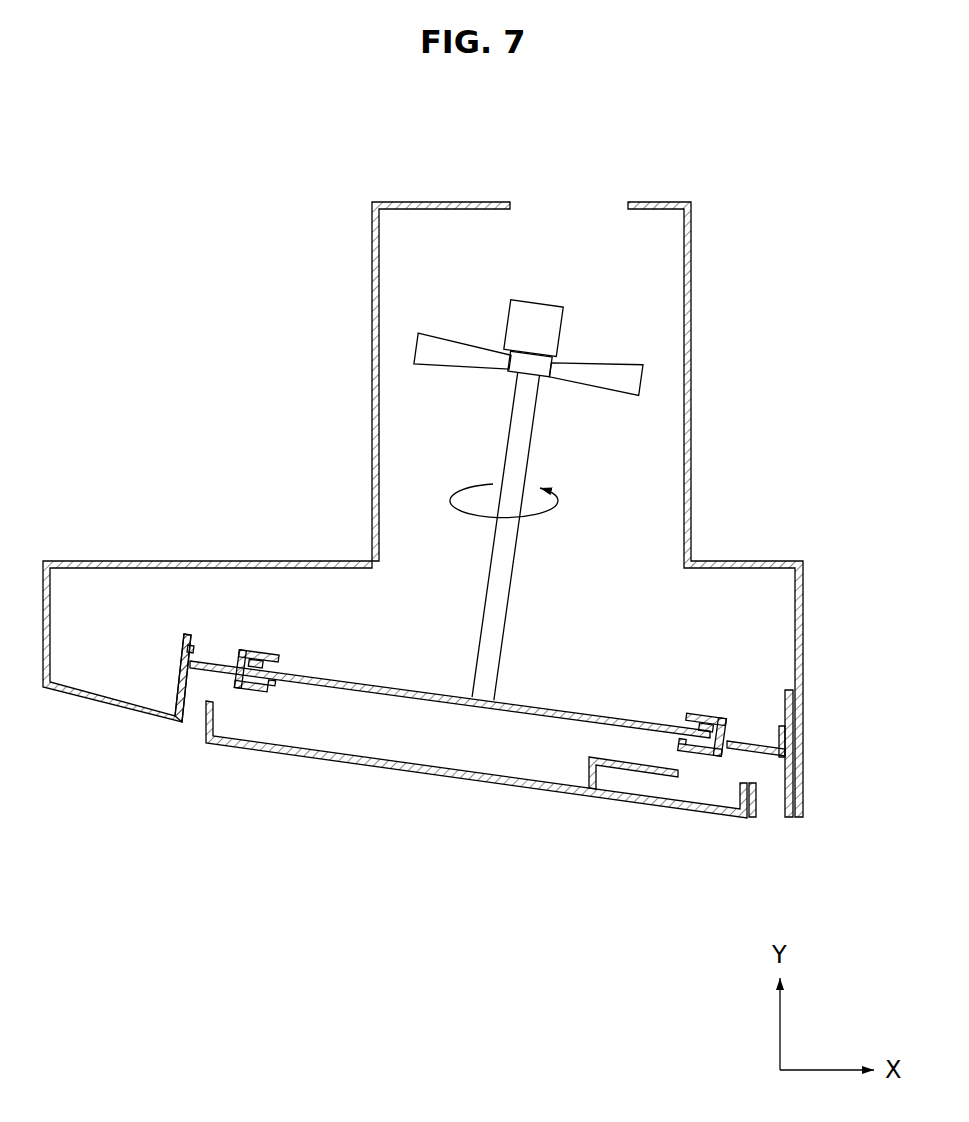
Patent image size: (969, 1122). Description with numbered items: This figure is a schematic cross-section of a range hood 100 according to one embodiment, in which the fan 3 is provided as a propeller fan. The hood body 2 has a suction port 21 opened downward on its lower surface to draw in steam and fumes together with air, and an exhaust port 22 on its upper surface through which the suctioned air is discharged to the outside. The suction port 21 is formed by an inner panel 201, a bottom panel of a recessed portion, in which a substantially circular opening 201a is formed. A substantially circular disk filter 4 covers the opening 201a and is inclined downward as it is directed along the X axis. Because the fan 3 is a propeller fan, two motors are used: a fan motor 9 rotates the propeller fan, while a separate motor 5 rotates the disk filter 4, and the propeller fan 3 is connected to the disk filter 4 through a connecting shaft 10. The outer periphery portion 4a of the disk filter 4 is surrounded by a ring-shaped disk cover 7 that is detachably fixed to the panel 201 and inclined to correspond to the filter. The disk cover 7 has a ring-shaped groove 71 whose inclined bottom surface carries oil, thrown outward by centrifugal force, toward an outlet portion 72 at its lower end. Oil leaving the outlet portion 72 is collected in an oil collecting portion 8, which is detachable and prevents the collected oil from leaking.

The range hood 100 is at (186, 168).
The hood body 2 is at (371, 360).
The exhaust port 22 is at (569, 196).
The suction port 21 is at (186, 726).
The inner panel 201 is at (193, 663).
The opening 201a is at (322, 674).
The fan 3 is at (452, 346).
The fan motor 9 is at (575, 328).
The motor 5 is at (566, 322).
The connecting shaft 10 is at (510, 585).
The disk filter 4 is at (445, 703).
The outer periphery portion 4a is at (252, 666).
The disk cover 7 is at (258, 688).
The groove 71 is at (240, 652).
The outlet portion 72 is at (706, 752).
The oil collecting portion 8 is at (590, 773).